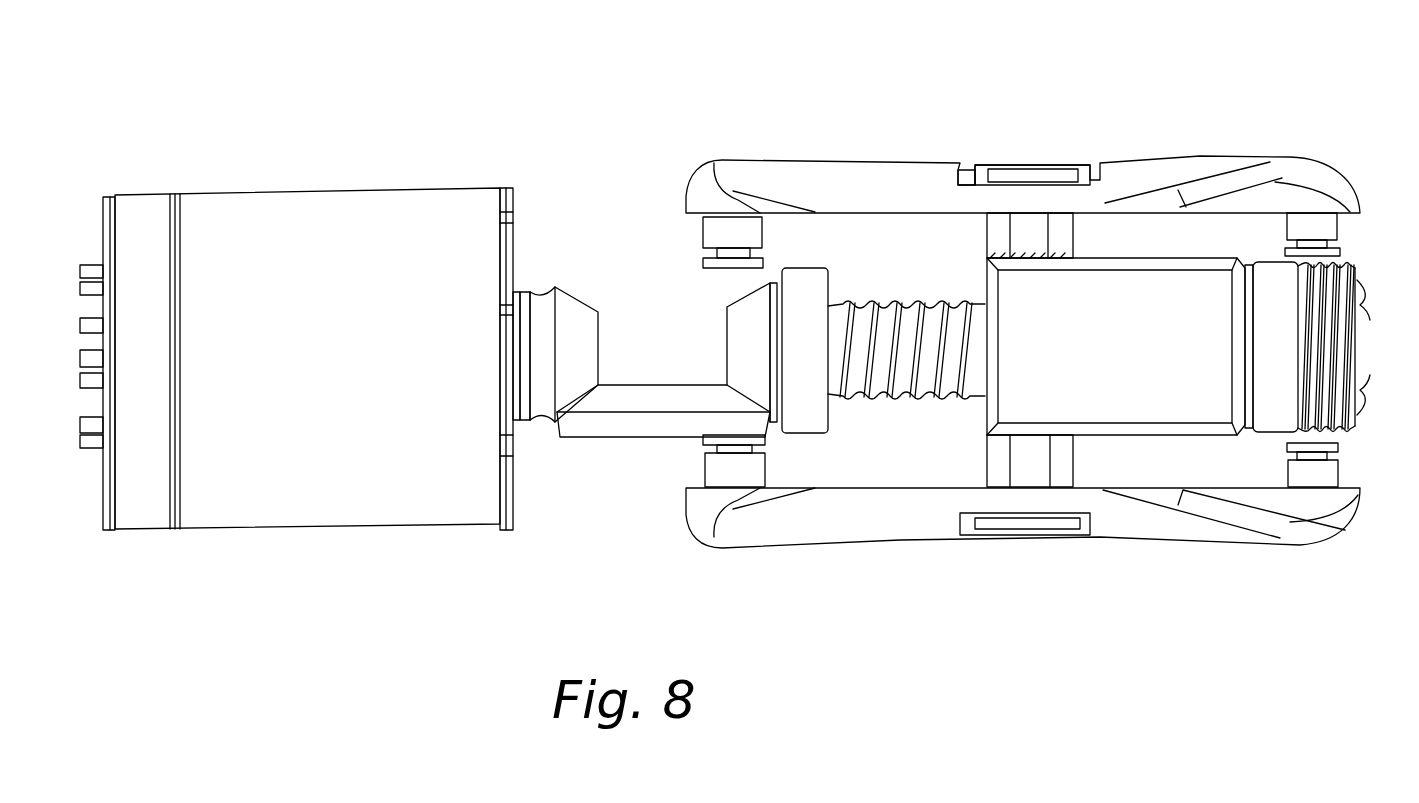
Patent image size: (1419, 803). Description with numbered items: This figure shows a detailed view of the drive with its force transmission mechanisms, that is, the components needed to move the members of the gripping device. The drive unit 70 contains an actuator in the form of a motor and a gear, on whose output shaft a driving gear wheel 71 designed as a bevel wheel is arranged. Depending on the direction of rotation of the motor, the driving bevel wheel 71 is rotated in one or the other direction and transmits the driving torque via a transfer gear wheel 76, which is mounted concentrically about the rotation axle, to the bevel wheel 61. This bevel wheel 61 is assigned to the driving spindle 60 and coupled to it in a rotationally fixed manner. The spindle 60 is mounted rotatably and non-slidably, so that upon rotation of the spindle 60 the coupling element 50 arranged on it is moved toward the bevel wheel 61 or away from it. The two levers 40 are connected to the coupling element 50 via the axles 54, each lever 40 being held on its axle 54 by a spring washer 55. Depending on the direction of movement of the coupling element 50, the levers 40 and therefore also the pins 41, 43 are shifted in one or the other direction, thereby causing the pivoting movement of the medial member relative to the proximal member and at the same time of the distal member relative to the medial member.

The lever 40 is at (846, 165).
The pin 41 is at (712, 232).
The pin 43 is at (1300, 220).
The coupling element 50 is at (1125, 295).
The axle 54 is at (995, 232).
The spring washer 55 is at (1030, 176).
The spindle 60 is at (890, 315).
The bevel wheel 61 is at (751, 312).
The drive unit 70 is at (249, 225).
The driving gear wheel 71 is at (570, 300).
The transfer gear wheel 76 is at (636, 398).